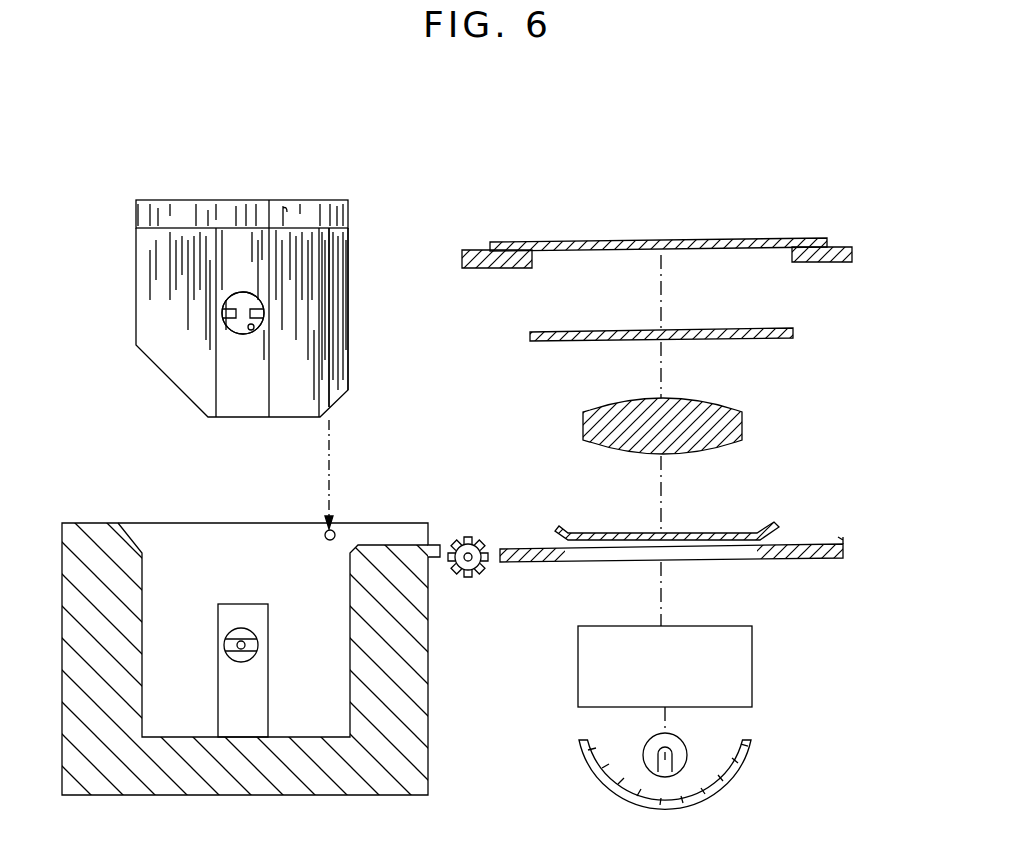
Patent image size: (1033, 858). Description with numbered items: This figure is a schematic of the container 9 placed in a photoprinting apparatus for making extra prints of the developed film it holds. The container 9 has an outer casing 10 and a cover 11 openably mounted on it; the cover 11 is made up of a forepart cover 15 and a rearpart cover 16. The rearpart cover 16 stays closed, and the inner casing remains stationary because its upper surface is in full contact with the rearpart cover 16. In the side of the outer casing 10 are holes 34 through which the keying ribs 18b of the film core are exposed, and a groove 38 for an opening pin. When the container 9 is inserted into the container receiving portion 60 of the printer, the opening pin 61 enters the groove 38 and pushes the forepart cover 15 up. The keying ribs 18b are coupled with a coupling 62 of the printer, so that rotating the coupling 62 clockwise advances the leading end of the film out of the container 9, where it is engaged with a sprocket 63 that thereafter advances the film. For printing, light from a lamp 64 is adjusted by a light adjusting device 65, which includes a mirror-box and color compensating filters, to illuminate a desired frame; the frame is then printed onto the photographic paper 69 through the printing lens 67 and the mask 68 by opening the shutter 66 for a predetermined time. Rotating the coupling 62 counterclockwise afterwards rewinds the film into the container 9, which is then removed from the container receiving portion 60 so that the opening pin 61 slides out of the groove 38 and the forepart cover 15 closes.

The container 9 is at (159, 165).
The outer casing 10 is at (126, 316).
The cover 11 is at (346, 115).
The forepart cover 15 is at (325, 212).
The rearpart cover 16 is at (247, 212).
The keying ribs 18b is at (245, 292).
The holes 34 is at (244, 335).
The groove 38 is at (325, 322).
The container receiving portion 60 is at (143, 570).
The opening pin 61 is at (333, 530).
The coupling 62 is at (241, 628).
The sprocket 63 is at (466, 580).
The lamp 64 is at (680, 770).
The light adjusting device 65 is at (742, 672).
The shutter 66 is at (793, 335).
The printing lens 67 is at (742, 425).
The mask 68 is at (827, 262).
The photographic paper 69 is at (777, 240).